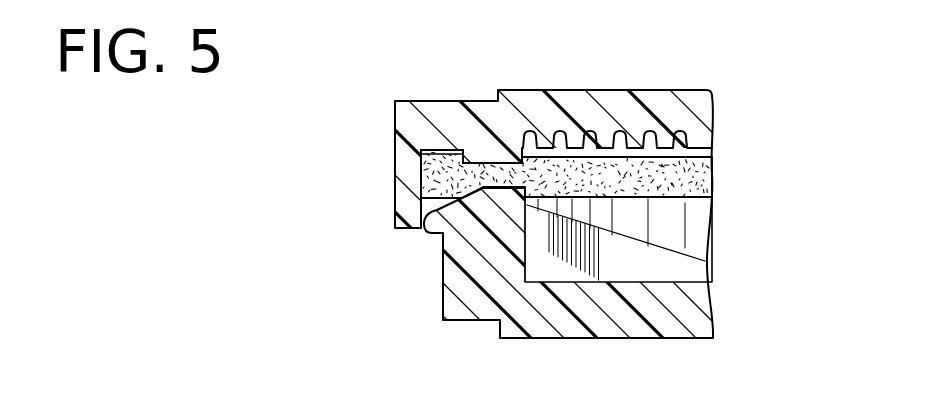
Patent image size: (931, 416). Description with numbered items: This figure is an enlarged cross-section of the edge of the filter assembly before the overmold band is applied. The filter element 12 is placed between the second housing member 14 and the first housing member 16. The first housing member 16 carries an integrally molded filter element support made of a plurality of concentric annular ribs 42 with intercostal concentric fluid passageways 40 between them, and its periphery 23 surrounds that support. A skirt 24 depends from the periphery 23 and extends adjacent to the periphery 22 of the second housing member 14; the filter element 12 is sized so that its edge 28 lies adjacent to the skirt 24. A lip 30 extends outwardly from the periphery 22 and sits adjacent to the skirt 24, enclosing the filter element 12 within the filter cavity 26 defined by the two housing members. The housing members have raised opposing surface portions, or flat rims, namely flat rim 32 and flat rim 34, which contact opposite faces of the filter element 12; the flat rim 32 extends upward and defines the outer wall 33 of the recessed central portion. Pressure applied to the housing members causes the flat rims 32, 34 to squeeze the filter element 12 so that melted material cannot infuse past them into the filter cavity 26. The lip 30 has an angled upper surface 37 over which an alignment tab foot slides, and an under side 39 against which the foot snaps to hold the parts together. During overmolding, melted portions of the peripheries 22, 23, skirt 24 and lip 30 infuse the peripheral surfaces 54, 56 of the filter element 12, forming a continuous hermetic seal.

The filter element 12 is at (703, 167).
The second housing member 14 is at (657, 339).
The first housing member 16 is at (617, 90).
The periphery of the second housing member 22 is at (443, 295).
The periphery of the first housing member 23 is at (432, 101).
The skirt 24 is at (396, 157).
The filter cavity 26 is at (695, 232).
The edge of the filter element 28 is at (420, 177).
The lip 30 is at (436, 236).
The flat rim 32 is at (505, 190).
The outer wall 33 is at (527, 250).
The flat rim 34 is at (481, 160).
The upper surface of the lip 37 is at (440, 243).
The under side of the lip 39 is at (433, 234).
The fluid passageways 40 is at (688, 130).
The annular ribs 42 is at (666, 143).
The peripheral surface of the filter element 54 is at (426, 208).
The peripheral surface of the filter element 56 is at (432, 151).